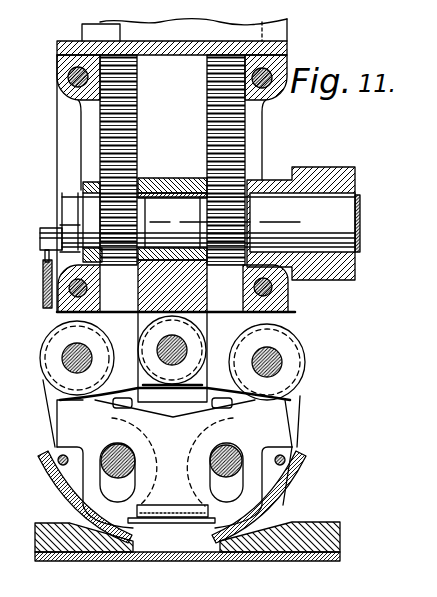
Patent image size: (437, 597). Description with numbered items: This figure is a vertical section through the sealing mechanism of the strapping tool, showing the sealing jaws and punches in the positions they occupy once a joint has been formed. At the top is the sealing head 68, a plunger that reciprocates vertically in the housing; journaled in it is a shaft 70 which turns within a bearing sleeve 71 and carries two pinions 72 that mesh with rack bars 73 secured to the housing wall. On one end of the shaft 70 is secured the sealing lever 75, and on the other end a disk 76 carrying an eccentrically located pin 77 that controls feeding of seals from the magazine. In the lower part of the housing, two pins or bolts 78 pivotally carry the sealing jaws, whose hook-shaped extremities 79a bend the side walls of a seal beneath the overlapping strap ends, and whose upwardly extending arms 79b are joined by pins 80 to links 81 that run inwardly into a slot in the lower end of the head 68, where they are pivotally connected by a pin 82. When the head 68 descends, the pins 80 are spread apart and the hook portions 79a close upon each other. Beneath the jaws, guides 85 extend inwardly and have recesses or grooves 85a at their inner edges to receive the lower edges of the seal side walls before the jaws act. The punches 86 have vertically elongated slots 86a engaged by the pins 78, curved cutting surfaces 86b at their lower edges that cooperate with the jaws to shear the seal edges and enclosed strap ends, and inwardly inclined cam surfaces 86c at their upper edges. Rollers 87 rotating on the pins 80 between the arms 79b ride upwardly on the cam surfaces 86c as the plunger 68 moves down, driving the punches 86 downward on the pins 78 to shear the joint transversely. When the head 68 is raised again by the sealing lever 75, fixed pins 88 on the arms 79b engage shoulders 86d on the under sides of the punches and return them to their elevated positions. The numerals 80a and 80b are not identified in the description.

The sealing head 68 is at (174, 165).
The shaft 70 is at (187, 208).
The bearing sleeve 71 is at (153, 175).
The pinions 72 is at (118, 262).
The rack bars 73 is at (133, 77).
The sealing lever 75 is at (337, 172).
The disk 76 is at (80, 210).
The eccentrically located pin 77 is at (43, 230).
The pins or bolts 78 is at (100, 472).
The hook-shaped extremities 79a is at (200, 523).
The upwardly extending arms 79b is at (298, 410).
The pins 80 is at (283, 355).
The plate 80a is at (45, 292).
The tab 80b is at (48, 257).
The links 81 is at (250, 320).
The pin 82 is at (223, 311).
The guides 85 is at (143, 165).
The recesses or grooves 85a is at (138, 540).
The punches 86 is at (245, 443).
The elongated slots 86a is at (285, 486).
The curved cutting surfaces 86b is at (283, 498).
The cam surfaces 86c is at (255, 392).
The shoulders 86d is at (50, 448).
The rollers 87 is at (43, 333).
The fixed pins 88 is at (43, 463).